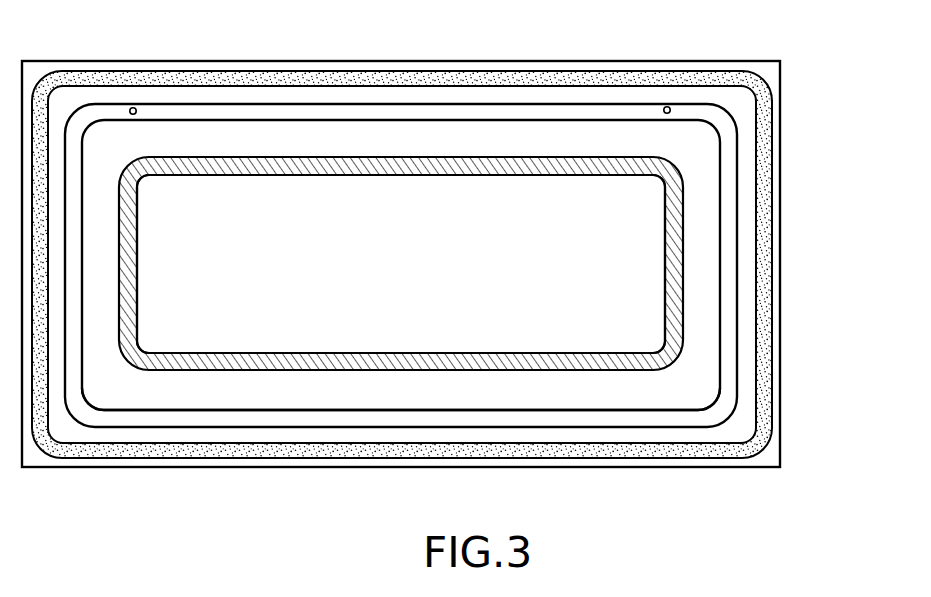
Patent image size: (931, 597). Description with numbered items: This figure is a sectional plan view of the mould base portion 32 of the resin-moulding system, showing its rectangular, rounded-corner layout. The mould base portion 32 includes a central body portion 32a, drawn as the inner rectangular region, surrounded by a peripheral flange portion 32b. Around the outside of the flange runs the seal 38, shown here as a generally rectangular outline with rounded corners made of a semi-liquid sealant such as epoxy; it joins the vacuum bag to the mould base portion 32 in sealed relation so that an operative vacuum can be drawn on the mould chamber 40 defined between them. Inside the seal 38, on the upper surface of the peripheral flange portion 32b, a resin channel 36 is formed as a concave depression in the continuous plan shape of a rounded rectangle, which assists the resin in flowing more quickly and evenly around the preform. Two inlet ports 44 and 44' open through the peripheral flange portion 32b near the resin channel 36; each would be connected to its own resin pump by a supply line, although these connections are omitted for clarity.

The mould base portion 32 is at (515, 263).
The central body portion 32a is at (683, 338).
The peripheral flange portion 32b is at (700, 242).
The resin channel 36 is at (328, 114).
The seal 38 is at (527, 78).
The mould chamber 40 is at (172, 387).
The inlet port 44 is at (104, 63).
The inlet port 44' is at (722, 69).